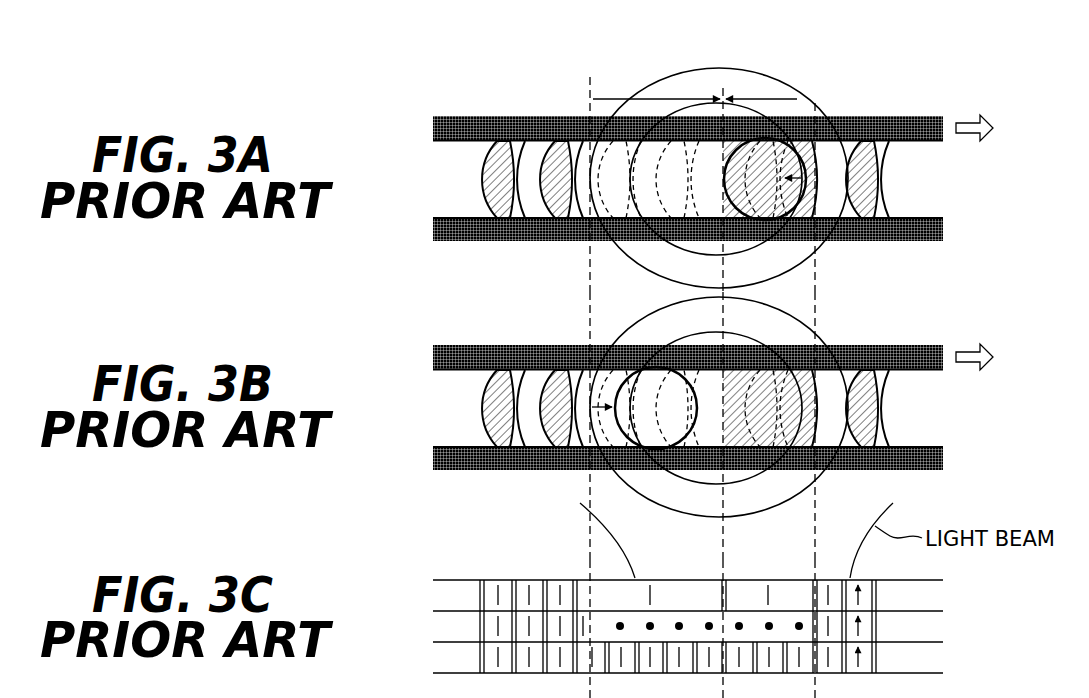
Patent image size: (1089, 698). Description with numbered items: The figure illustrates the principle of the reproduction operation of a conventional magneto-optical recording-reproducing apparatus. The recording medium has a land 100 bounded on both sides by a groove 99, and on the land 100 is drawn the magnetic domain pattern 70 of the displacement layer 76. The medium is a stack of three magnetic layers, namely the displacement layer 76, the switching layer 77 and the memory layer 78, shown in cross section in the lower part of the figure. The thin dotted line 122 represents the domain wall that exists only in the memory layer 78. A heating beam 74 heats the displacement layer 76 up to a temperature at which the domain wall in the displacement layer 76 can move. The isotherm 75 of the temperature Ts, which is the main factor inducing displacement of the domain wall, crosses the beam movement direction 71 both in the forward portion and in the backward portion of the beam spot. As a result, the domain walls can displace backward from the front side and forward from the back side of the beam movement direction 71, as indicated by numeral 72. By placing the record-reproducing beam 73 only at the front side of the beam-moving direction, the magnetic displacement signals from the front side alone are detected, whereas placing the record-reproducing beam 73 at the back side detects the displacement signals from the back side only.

In FIG. 3B, the magnetic domain pattern 70 is at (940, 412).
In FIG. 3A, the beam movement direction 71 is at (970, 120).
In FIG. 3B, the beam movement direction 71 is at (970, 349).
In FIG. 3A, the domain wall displacement 72 is at (768, 97).
In FIG. 3B, the domain wall displacement 72 is at (716, 408).
In FIG. 3A, the record-reproducing beam 73 is at (783, 226).
In FIG. 3B, the record-reproducing beam 73 is at (620, 378).
In FIG. 3A, the heating beam 74 is at (684, 275).
In FIG. 3B, the heating beam 74 is at (834, 340).
In FIG. 3A, the isotherm 75 is at (633, 238).
In FIG. 3B, the isotherm 75 is at (633, 347).
In FIG. 3C, the displacement layer 76 is at (438, 592).
In FIG. 3C, the switching layer 77 is at (438, 623).
In FIG. 3C, the memory layer 78 is at (438, 655).
In FIG. 3A, the groove 99 is at (432, 122).
In FIG. 3B, the groove 99 is at (432, 351).
In FIG. 3A, the land 100 is at (664, 180).
In FIG. 3B, the land 100 is at (664, 409).
In FIG. 3A, the domain wall 122 is at (650, 117).
In FIG. 3B, the domain wall 122 is at (672, 450).